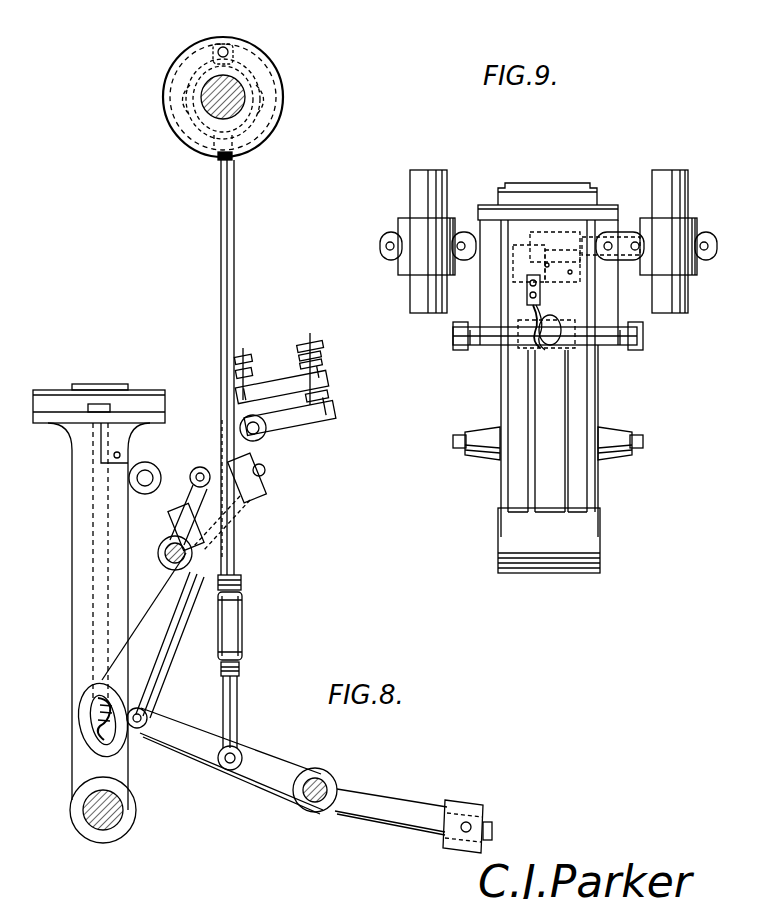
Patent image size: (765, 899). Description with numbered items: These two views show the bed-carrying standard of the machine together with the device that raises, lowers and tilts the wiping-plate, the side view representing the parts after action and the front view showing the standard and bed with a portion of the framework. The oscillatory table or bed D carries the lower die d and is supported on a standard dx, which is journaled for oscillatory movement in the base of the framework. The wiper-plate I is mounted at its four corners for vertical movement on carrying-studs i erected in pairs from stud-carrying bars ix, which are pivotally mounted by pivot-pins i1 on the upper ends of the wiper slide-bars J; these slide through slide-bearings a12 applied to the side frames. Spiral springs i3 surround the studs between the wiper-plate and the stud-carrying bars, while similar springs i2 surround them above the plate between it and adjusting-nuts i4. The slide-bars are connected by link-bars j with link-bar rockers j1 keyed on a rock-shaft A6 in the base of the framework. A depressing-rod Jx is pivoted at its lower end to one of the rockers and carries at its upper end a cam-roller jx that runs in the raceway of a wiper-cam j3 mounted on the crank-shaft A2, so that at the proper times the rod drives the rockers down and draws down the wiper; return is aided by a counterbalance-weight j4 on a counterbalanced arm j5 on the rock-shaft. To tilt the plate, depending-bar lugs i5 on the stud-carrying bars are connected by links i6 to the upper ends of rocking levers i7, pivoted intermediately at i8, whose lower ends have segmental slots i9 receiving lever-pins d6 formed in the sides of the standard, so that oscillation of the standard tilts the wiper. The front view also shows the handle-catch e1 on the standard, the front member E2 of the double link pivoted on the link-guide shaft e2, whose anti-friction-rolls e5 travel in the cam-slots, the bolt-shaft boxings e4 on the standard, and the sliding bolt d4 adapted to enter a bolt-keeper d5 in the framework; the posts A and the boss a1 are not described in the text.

In FIG. 8, the link-bar j is at (178, 92).
In FIG. 8, the cam-roller jx is at (232, 44).
In FIG. 8, the crank-shaft A2 is at (243, 95).
In FIG. 8, the wiper-cam j3 is at (282, 118).
In FIG. 8, the depressing-rod Jx is at (221, 280).
In FIG. 8, the carrying-stud i is at (273, 360).
In FIG. 8, the adjusting-nut i4 is at (251, 377).
In FIG. 8, the wiper-plate I is at (281, 385).
In FIG. 8, the spiral spring i2 is at (322, 360).
In FIG. 8, the spiral spring i3 is at (329, 398).
In FIG. 8, the pivot-pin i1 is at (267, 433).
In FIG. 8, the stud-carrying bar ix is at (318, 427).
In FIG. 8, the depending-bar lug i5 is at (266, 470).
In FIG. 8, the slide-bearing a12 is at (262, 486).
In FIG. 8, the wiper slide-bar J is at (247, 497).
In FIG. 8, the link i6 is at (200, 467).
In FIG. 8, the rocking lever i7 is at (187, 513).
In FIG. 8, the pivot i8 is at (166, 554).
In FIG. 8, the bolt-shaft boxing e4 is at (148, 465).
In FIG. 8, the oscillatory table or bed D is at (36, 404).
In FIG. 9, the oscillatory table or bed D is at (539, 201).
In FIG. 8, the lower die d is at (100, 384).
In FIG. 9, the lower die d is at (552, 186).
In FIG. 8, the standard dx is at (72, 560).
In FIG. 9, the standard dx is at (590, 392).
In FIG. 8, the pivot boss a1 is at (103, 818).
In FIG. 8, the lever-pin d6 is at (92, 715).
In FIG. 9, the lever-pin d6 is at (458, 450).
In FIG. 8, the segmental slot i9 is at (102, 738).
In FIG. 8, the link-bar rocker j1 is at (190, 745).
In FIG. 8, the rock-shaft A6 is at (322, 790).
In FIG. 8, the counterbalanced arm j5 is at (400, 815).
In FIG. 8, the counterbalance-weight j4 is at (480, 807).
In FIG. 9, the post A is at (412, 190).
In FIG. 9, the bolt-keeper d5 is at (625, 225).
In FIG. 9, the sliding bolt d4 is at (548, 232).
In FIG. 9, the front member of double link E2 is at (563, 316).
In FIG. 9, the anti-friction-roll e5 is at (453, 333).
In FIG. 9, the link-guide shaft e2 is at (485, 350).
In FIG. 9, the handle-catch e1 is at (547, 352).